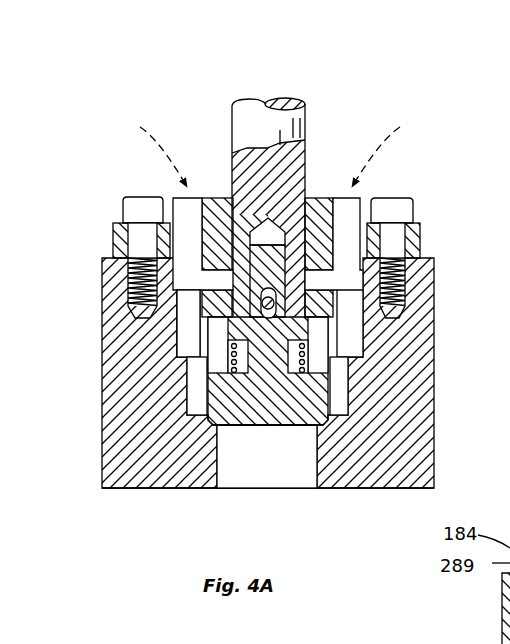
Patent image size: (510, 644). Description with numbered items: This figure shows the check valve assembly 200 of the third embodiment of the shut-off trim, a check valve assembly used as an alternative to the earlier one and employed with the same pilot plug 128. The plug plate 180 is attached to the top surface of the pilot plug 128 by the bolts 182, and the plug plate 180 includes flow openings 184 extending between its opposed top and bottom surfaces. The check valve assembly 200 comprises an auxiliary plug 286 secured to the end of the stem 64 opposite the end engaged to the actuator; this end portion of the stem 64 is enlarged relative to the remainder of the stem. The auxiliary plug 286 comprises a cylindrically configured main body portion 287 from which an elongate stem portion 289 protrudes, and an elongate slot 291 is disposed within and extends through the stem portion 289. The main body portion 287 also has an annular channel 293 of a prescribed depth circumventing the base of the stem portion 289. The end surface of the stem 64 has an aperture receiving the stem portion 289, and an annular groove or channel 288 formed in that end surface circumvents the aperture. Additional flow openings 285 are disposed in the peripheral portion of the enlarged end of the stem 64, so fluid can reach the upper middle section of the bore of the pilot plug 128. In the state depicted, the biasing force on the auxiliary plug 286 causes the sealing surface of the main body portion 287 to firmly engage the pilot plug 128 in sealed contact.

The check valve assembly 200 is at (183, 125).
The stem 64 is at (232, 112).
The plug plate 180 is at (319, 203).
The bolts 182 is at (397, 198).
The flow openings 184 is at (183, 237).
The stem portion 289 is at (223, 260).
The annular groove or channel 288 is at (318, 306).
The elongate slot 291 is at (185, 320).
The flow openings 285 is at (207, 332).
The annular channel 293 is at (325, 378).
The pilot plug 128 is at (118, 428).
The auxiliary plug 286 is at (238, 470).
The main body portion 287 is at (284, 425).